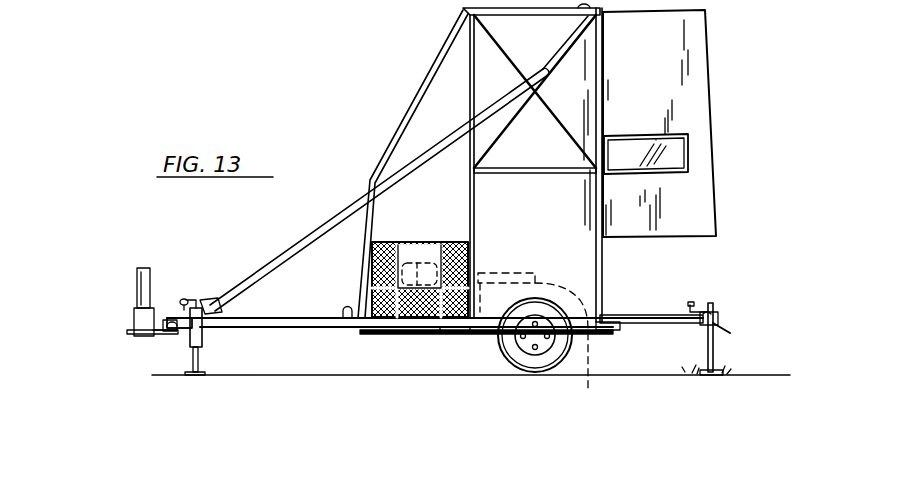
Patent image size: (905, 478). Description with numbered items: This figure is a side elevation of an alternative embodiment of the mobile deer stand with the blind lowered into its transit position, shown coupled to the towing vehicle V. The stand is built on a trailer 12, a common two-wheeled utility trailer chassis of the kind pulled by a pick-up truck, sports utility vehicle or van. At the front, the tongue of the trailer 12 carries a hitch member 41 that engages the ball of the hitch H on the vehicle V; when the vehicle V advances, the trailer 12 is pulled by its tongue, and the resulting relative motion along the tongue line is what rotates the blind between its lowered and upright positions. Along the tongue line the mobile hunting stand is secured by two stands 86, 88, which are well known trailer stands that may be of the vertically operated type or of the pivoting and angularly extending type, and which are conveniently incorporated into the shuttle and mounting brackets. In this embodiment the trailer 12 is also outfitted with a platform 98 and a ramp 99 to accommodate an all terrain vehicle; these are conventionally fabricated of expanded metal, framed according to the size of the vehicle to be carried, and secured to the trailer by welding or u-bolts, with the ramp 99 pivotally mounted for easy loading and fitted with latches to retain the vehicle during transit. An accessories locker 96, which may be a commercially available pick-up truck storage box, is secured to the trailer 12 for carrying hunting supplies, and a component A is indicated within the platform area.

The trailer 12 is at (432, 342).
The ramp 99 is at (366, 268).
The stand 86 is at (200, 342).
The stand 88 is at (710, 343).
The accessories locker 96 is at (588, 388).
The platform 98 is at (458, 330).
The actuator A is at (410, 263).
The vehicle V is at (138, 266).
The hitch H is at (172, 330).
The hitch member 41 is at (187, 335).